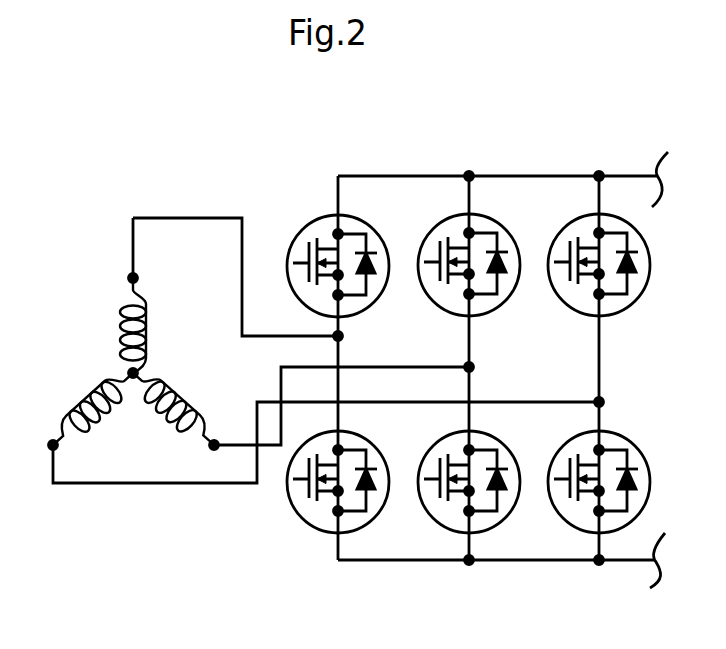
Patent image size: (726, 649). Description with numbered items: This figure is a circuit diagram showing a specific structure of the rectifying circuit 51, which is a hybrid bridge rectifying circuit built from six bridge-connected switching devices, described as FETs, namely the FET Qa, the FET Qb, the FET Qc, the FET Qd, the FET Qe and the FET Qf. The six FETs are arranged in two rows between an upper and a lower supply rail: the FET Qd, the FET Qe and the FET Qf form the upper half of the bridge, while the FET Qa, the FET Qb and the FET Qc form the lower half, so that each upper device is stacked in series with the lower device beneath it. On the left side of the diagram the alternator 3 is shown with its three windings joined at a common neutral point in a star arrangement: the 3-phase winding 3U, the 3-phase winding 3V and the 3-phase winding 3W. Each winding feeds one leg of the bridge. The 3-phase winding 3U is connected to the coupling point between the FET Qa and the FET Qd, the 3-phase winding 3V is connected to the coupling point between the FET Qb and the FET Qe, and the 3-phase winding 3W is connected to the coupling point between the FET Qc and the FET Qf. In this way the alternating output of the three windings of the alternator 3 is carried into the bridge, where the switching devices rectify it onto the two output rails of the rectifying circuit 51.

The rectifying circuit 51 is at (373, 173).
The alternator 3 is at (73, 352).
The 3-phase winding 3U is at (112, 325).
The 3-phase winding 3V is at (177, 408).
The 3-phase winding 3W is at (80, 408).
The switching device (FET) Qa is at (284, 493).
The switching device (FET) Qb is at (408, 493).
The switching device (FET) Qc is at (545, 495).
The switching device (FET) Qd is at (291, 237).
The switching device (FET) Qe is at (421, 238).
The switching device (FET) Qf is at (551, 238).